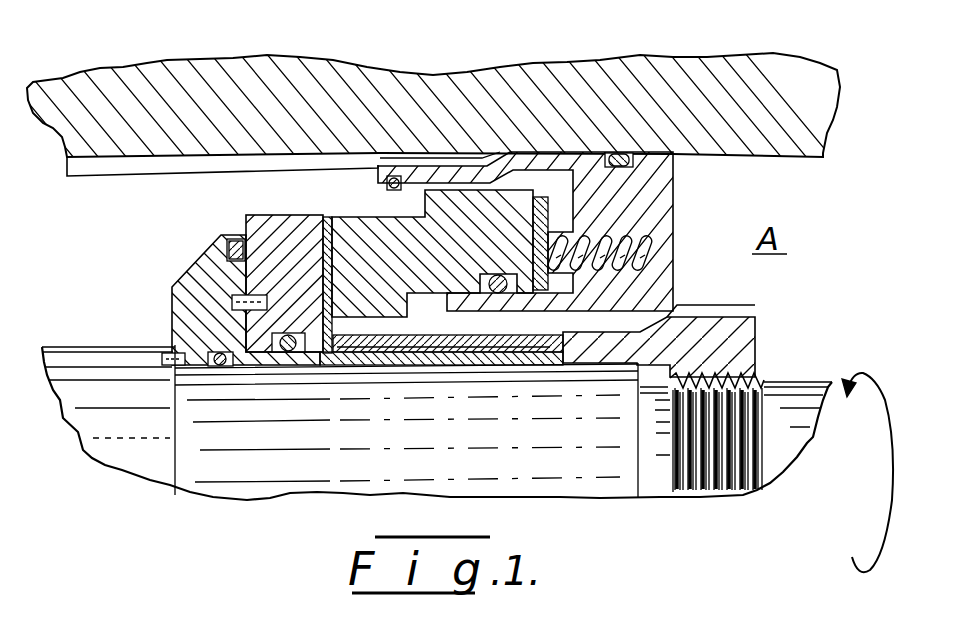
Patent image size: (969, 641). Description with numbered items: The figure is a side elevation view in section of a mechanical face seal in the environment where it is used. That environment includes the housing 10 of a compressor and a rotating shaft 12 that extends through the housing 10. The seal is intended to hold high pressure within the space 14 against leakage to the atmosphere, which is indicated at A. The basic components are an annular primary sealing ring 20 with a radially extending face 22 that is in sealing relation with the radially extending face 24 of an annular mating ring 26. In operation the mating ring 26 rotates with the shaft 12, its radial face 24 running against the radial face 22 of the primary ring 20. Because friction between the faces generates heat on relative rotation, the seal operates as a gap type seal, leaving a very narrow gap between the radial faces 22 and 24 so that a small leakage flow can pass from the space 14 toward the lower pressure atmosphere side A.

The housing 10 is at (548, 72).
The rotating shaft 12 is at (328, 482).
The space 14 is at (122, 267).
The primary sealing ring 20 is at (382, 218).
The radially extending face 22 is at (318, 355).
The radially extending face 24 is at (330, 302).
The mating ring 26 is at (248, 217).